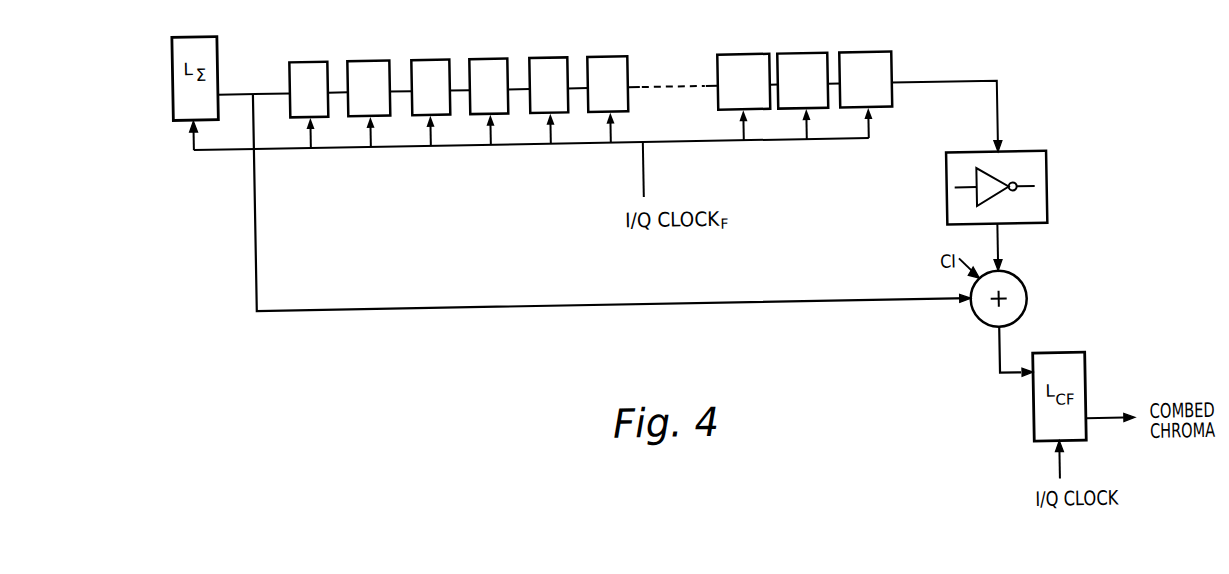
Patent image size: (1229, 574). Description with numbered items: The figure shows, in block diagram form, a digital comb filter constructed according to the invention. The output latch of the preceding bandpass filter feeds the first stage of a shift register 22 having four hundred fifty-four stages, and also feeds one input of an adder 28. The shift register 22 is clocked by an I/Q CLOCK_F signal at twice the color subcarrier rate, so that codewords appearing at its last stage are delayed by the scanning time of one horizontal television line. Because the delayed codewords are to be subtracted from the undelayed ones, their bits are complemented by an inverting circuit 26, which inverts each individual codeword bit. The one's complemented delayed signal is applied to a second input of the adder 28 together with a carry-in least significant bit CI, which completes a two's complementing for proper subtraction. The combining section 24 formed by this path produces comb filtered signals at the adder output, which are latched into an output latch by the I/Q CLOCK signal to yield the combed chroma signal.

The shift register 22 is at (641, 52).
The comb filter feedback section 24 is at (1072, 275).
The inverting circuit 26 is at (1045, 192).
The adder 28 is at (1021, 318).